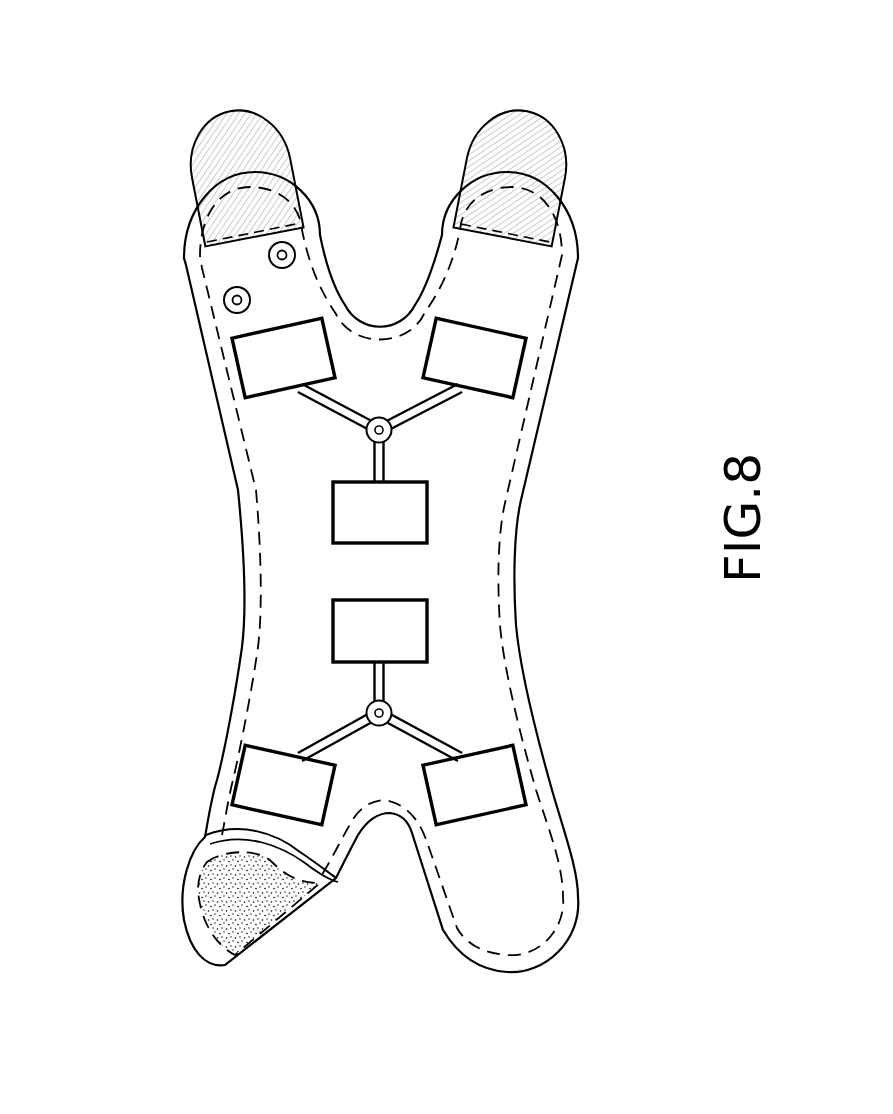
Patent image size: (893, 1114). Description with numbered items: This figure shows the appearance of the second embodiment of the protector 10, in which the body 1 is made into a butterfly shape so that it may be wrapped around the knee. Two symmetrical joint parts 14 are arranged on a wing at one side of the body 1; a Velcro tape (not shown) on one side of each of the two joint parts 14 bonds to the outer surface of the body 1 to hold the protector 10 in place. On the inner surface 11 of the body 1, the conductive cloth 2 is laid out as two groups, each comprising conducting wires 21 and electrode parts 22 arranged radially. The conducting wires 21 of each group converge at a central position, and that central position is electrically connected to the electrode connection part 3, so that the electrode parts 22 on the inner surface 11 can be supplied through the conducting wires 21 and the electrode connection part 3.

The protector 10 is at (65, 591).
The body 1 is at (208, 440).
The inner surface 11 is at (243, 683).
The joint parts 14 is at (243, 127).
The conductive cloth 2 is at (312, 499).
The conducting wires 21 is at (422, 405).
The electrode parts 22 is at (460, 340).
The electrode connection part 3 is at (392, 435).